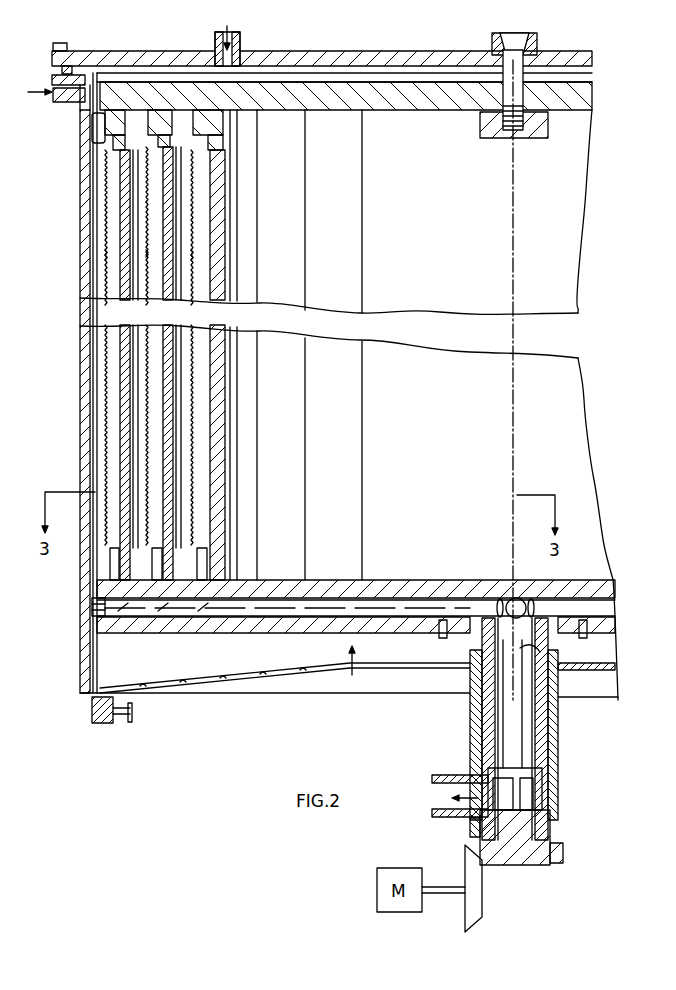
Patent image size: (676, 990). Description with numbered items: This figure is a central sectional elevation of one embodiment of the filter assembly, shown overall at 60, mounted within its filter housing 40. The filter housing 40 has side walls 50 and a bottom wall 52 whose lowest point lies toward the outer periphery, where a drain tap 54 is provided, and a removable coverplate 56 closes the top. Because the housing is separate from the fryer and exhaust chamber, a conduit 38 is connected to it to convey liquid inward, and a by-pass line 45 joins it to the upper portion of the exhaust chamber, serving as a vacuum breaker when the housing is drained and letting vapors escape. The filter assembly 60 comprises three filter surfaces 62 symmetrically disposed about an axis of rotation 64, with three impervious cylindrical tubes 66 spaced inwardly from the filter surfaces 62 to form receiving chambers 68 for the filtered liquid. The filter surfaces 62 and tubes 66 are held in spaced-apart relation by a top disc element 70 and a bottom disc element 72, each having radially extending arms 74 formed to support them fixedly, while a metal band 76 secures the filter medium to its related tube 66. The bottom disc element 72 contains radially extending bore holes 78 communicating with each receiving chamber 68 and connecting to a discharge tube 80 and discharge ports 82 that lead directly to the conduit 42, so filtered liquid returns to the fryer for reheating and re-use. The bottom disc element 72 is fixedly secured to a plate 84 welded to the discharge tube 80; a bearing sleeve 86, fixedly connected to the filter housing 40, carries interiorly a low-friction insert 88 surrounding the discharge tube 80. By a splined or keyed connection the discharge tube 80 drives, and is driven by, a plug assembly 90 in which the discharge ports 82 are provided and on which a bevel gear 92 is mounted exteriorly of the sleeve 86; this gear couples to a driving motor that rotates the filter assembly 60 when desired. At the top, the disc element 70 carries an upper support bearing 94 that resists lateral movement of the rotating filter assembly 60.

The conduit 38 is at (60, 103).
The filter housing 40 is at (220, 722).
The conduit 42 is at (440, 806).
The by-pass line 45 is at (242, 42).
The side walls 50 is at (81, 352).
The bottom wall 52 is at (259, 673).
The drain tap 54 is at (100, 725).
The removable coverplate 56 is at (432, 54).
The filter assembly 60 is at (357, 671).
The filter surfaces 62 is at (192, 256).
The axis of rotation 64 is at (512, 470).
The impervious cylindrical tubes 66 is at (175, 232).
The receiving chambers 68 is at (233, 345).
The top disc element 70 is at (268, 112).
The bottom disc element 72 is at (284, 585).
The radially extending arms 74 is at (150, 628).
The metal band 76 is at (95, 140).
The radially extending bore holes 78 is at (460, 603).
The discharge tube 80 is at (523, 715).
The discharge ports 82 is at (522, 780).
The plate 84 is at (526, 642).
The bearing sleeve 86 is at (476, 757).
The insert 88 is at (548, 745).
The plug assembly 90 is at (510, 858).
The bevel gear 92 is at (553, 857).
The upper support bearing 94 is at (539, 142).